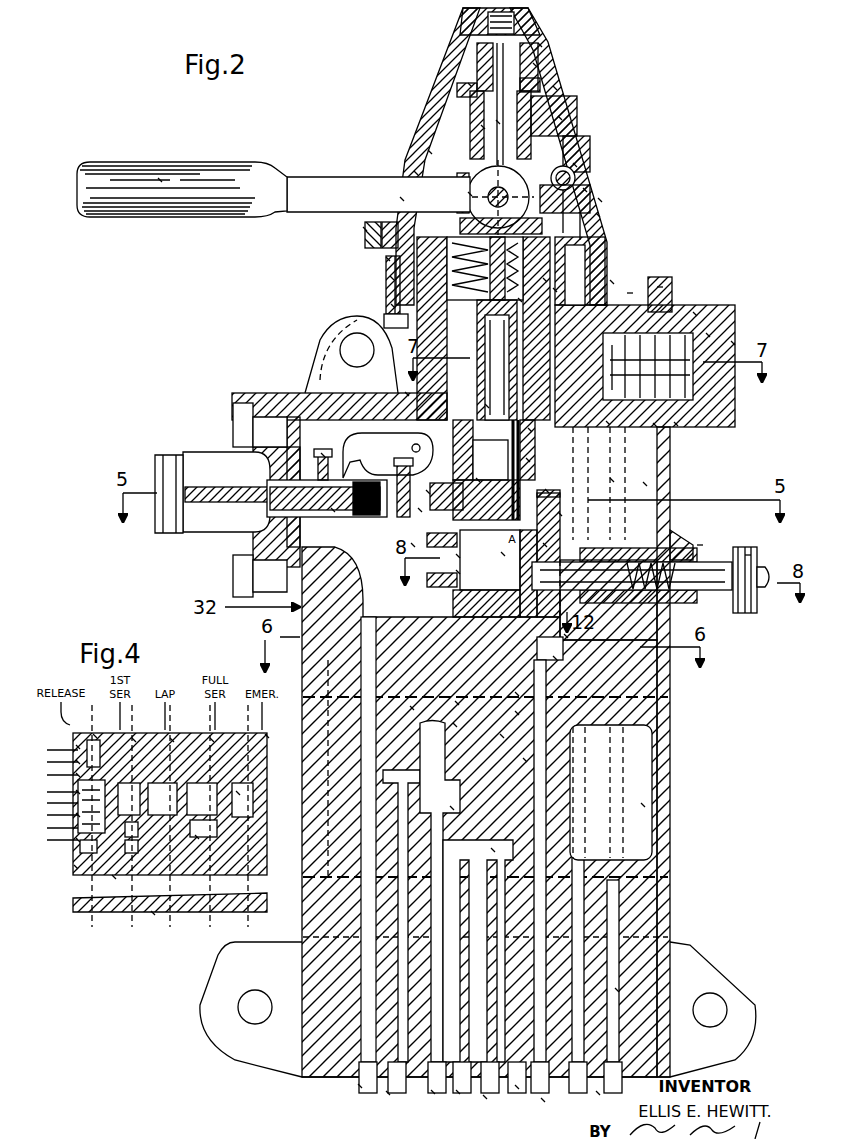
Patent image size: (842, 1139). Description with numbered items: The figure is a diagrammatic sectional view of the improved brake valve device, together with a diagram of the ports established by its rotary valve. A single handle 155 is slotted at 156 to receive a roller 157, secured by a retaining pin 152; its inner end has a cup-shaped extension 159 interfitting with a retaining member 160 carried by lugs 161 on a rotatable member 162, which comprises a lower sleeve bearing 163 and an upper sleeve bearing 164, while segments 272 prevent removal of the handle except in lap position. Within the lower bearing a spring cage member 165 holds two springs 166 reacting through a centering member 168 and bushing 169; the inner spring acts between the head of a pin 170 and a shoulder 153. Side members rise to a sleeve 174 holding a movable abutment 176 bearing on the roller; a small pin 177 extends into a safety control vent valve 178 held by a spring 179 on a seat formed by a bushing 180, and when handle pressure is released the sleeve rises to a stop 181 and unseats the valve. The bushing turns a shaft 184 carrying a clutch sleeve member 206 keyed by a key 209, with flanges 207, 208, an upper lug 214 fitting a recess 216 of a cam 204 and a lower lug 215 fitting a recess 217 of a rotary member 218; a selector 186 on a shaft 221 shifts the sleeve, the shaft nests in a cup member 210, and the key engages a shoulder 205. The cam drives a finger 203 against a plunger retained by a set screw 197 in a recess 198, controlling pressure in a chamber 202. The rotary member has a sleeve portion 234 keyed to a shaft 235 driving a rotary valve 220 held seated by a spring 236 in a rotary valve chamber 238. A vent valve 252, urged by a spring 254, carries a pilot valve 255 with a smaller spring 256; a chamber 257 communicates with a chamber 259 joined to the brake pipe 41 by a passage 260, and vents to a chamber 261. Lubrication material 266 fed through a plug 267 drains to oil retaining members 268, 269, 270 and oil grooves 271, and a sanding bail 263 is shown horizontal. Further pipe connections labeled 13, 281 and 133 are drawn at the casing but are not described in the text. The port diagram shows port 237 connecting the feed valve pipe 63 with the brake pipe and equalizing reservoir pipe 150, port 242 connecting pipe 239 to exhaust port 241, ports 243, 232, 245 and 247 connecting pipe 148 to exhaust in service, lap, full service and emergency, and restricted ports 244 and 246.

In FIG. 2, the spring 179 is at (540, 45).
In FIG. 2, the safety control vent valve 178 is at (535, 65).
In FIG. 2, the bushing 180 is at (555, 88).
In FIG. 2, the upper sleeve bearing 164 is at (560, 118).
In FIG. 2, the rotatable member 162 is at (575, 165).
In FIG. 2, the lugs 161 is at (585, 190).
In FIG. 2, the retaining member 160 is at (600, 200).
In FIG. 2, the cup-shaped extension 159 is at (598, 215).
In FIG. 2, the segments 272 is at (545, 280).
In FIG. 2, the spring cage member 165 is at (520, 300).
In FIG. 2, the lower sleeve bearing 163 is at (612, 282).
In FIG. 2, the shoulder 153 is at (555, 290).
In FIG. 2, the plug 267 is at (660, 288).
In FIG. 2, the porous lubrication retaining material 266 is at (630, 293).
In FIG. 2, the chamber 257 is at (695, 314).
In FIG. 2, the spring 254 is at (708, 335).
In FIG. 2, the smaller spring 256 is at (733, 343).
In FIG. 2, the pilot valve 255 is at (676, 424).
In FIG. 2, the vent valve 252 is at (655, 425).
In FIG. 2, the chamber 261 is at (608, 423).
In FIG. 2, the oil retaining member 268 is at (530, 430).
In FIG. 2, the oil retaining member 269 is at (528, 460).
In FIG. 2, the chamber 259 is at (612, 480).
In FIG. 2, the chamber 202 is at (645, 484).
In FIG. 2, the recess 216 is at (547, 491).
In FIG. 2, the upper lug 214 is at (560, 514).
In FIG. 2, the key 209 is at (545, 545).
In FIG. 2, the shaft 221 is at (700, 545).
In FIG. 2, the selector 186 is at (748, 555).
In FIG. 2, the lower lug 215 is at (566, 636).
In FIG. 2, the recess 217 is at (555, 658).
In FIG. 2, the rotary member 218 is at (412, 708).
In FIG. 2, the oil grooves 271 is at (457, 703).
In FIG. 2, the cup member 210 is at (455, 725).
In FIG. 2, the oil retaining member 270 is at (517, 694).
In FIG. 2, the sleeve portion 234 is at (517, 713).
In FIG. 2, the shaft 235 is at (502, 736).
In FIG. 2, the spring 236 is at (525, 760).
In FIG. 2, the rotary valve 220 is at (545, 818).
In FIG. 4, the rotary valve 220 is at (267, 736).
In FIG. 2, the rotary valve chamber 238 is at (643, 805).
In FIG. 2, the port 237 is at (452, 808).
In FIG. 4, the port 237 is at (95, 736).
In FIG. 2, the port 242 is at (493, 850).
In FIG. 4, the port 242 is at (76, 867).
In FIG. 2, the shaft 184 is at (487, 406).
In FIG. 2, the set screw 197 is at (323, 455).
In FIG. 2, the recess 198 is at (333, 510).
In FIG. 2, the finger 203 is at (428, 492).
In FIG. 2, the cam 204 is at (420, 510).
In FIG. 4, the cam 204 is at (153, 913).
In FIG. 2, the flange 207 is at (413, 545).
In FIG. 2, the shoulder 205 is at (503, 554).
In FIG. 2, the clutch sleeve member 206 is at (458, 556).
In FIG. 2, the flange 208 is at (458, 572).
In FIG. 2, the pipe 13 is at (486, 465).
In FIG. 2, the stop 181 is at (470, 85).
In FIG. 2, the small pin 177 is at (498, 122).
In FIG. 2, the sleeve 174 is at (483, 127).
In FIG. 2, the movable abutment 176 is at (428, 152).
In FIG. 2, the slot 156 is at (414, 173).
In FIG. 2, the retaining pin 152 is at (381, 199).
In FIG. 2, the roller 157 is at (470, 194).
In FIG. 2, the handle 155 is at (160, 180).
In FIG. 2, the sanding bail 263 is at (365, 229).
In FIG. 2, the pin 170 is at (388, 259).
In FIG. 2, the springs 166 is at (392, 278).
In FIG. 2, the centering member 168 is at (393, 306).
In FIG. 2, the bushing 169 is at (407, 394).
In FIG. 2, the passage 260 is at (617, 990).
In FIG. 2, the pipe connection 281 is at (360, 1086).
In FIG. 2, the feed valve pipe 63 is at (388, 1093).
In FIG. 4, the feed valve pipe 63 is at (78, 747).
In FIG. 2, the brake pipe 41 is at (433, 1092).
In FIG. 4, the brake pipe 41 is at (60, 755).
In FIG. 2, the pipe 148 is at (458, 1092).
In FIG. 4, the pipe 148 is at (57, 795).
In FIG. 2, the equalizing reservoir pipe 150 is at (485, 1097).
In FIG. 4, the equalizing reservoir pipe 150 is at (57, 815).
In FIG. 2, the exhaust port 241 is at (517, 1087).
In FIG. 4, the exhaust port 241 is at (57, 772).
In FIG. 2, the pipe 133 is at (598, 1093).
In FIG. 4, the port 243 is at (134, 740).
In FIG. 4, the port 232 is at (172, 740).
In FIG. 4, the rotary valve port 245 is at (212, 740).
In FIG. 4, the pipe 239 is at (57, 835).
In FIG. 4, the restricted port 244 is at (112, 885).
In FIG. 4, the restricted rotary valve port 246 is at (197, 837).
In FIG. 4, the port 247 is at (238, 793).